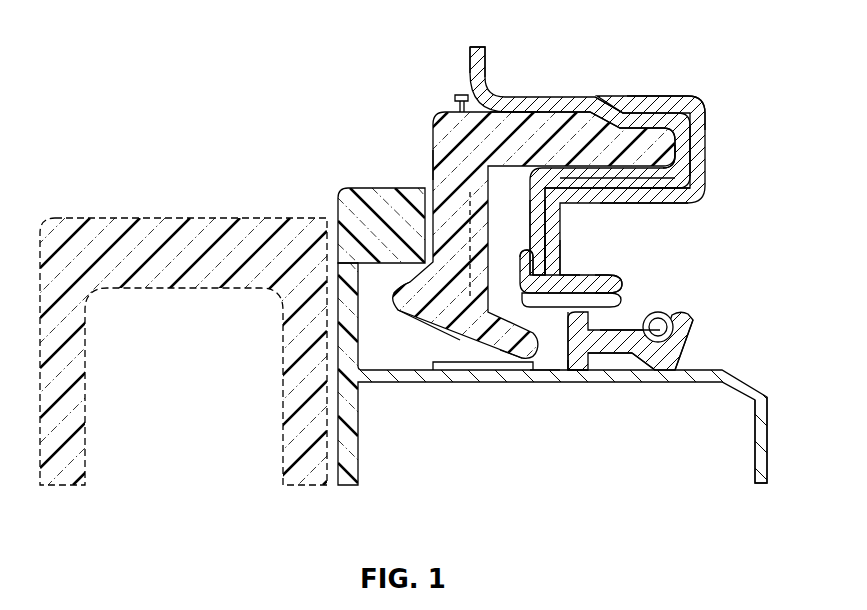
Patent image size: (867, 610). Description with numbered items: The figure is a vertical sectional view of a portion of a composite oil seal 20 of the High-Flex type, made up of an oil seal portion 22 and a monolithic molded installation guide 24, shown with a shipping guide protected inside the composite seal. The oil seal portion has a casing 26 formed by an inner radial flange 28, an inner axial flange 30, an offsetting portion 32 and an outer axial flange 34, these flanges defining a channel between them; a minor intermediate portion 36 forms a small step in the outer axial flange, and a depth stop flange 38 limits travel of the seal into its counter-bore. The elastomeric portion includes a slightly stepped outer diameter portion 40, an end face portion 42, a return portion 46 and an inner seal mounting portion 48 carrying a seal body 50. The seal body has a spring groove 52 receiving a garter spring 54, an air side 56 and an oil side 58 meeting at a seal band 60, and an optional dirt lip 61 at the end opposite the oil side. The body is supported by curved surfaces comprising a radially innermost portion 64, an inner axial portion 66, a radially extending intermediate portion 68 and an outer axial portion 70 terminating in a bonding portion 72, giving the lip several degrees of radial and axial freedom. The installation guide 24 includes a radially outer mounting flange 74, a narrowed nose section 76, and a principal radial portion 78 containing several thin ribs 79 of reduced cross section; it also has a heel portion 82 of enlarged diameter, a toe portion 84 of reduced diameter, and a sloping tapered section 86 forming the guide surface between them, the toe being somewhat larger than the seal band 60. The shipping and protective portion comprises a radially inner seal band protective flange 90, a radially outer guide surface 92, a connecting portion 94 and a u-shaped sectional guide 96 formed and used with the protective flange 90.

The composite oil seal 20 is at (715, 129).
The oil seal portion 22 is at (650, 268).
The installation guide 24 is at (403, 125).
The casing 26 is at (553, 92).
The inner radial flange 28 is at (560, 268).
The inner axial flange 30 is at (628, 205).
The offsetting portion 32 is at (688, 163).
The outer axial flange 34 is at (594, 98).
The minor intermediate portion 36 is at (685, 107).
The depth stop flange 38 is at (474, 72).
The outer diameter stepped portion 40 is at (640, 98).
The end face portion 42 is at (698, 137).
The return portion 46 is at (657, 205).
The inner seal mounting portion 48 is at (546, 232).
The seal body 50 is at (675, 310).
The spring groove 52 is at (692, 322).
The garter spring 54 is at (632, 352).
The air side 56 is at (612, 360).
The oil side 58 is at (692, 358).
The seal band 60 is at (652, 367).
The dirt lip 61 is at (585, 372).
The radially innermost portion 64 is at (545, 382).
The inner axial portion 66 is at (566, 330).
The radially extending intermediate portion 68 is at (623, 296).
The outer axial portion 70 is at (430, 320).
The bonding portion 72 is at (507, 262).
The radially outer mounting flange 74 is at (505, 108).
The narrowed nose section 76 is at (657, 197).
The principal radial portion 78 is at (452, 162).
The thin ribs 79 is at (468, 193).
The heel portion 82 is at (400, 292).
The toe portion 84 is at (500, 365).
The tapered section 86 is at (458, 322).
The seal band protective flange 90 is at (728, 382).
The radially outer guide surface 92 is at (349, 200).
The connecting portion 94 is at (346, 360).
The u-shaped sectional guide 96 is at (145, 273).